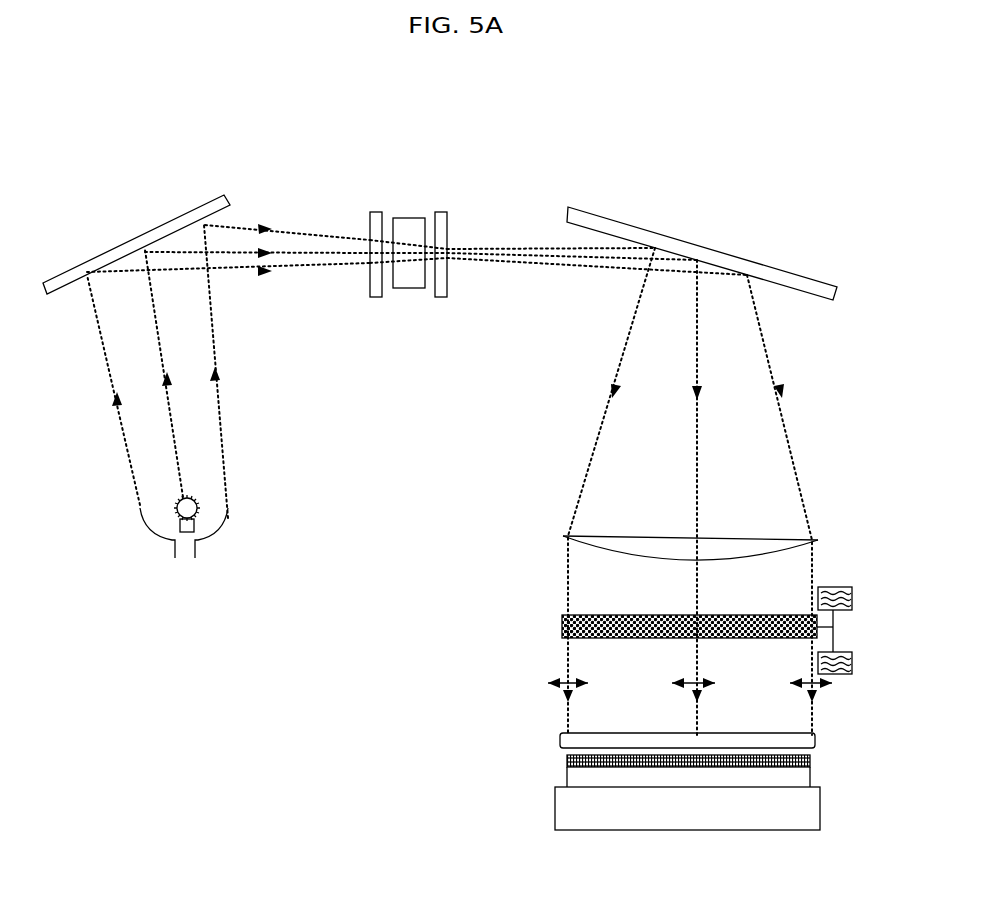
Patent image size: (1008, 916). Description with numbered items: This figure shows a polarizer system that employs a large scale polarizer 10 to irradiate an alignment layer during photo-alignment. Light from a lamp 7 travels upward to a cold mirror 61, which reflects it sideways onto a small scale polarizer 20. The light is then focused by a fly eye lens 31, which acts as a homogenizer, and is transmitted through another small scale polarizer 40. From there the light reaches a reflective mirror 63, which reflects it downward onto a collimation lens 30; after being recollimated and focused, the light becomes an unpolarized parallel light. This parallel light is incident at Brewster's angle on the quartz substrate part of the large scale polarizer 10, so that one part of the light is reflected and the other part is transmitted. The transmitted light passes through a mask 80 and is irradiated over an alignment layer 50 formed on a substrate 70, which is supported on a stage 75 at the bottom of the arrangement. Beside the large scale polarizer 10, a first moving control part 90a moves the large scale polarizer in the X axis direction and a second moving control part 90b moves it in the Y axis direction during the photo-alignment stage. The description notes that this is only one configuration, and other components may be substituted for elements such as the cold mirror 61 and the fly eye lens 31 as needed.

The lamp 7 is at (194, 494).
The cold mirror 61 is at (128, 248).
The small scale polarizer 20 is at (373, 212).
The fly eye lens 31 is at (412, 280).
The small scale polarizer 40 is at (444, 212).
The reflective mirror 63 is at (787, 277).
The collimation lens 30 is at (777, 552).
The large scale polarizer 10 is at (572, 626).
The first moving control part 90a is at (827, 590).
The second moving control part 90b is at (840, 674).
The mask 80 is at (583, 737).
The alignment layer 50 is at (570, 758).
The substrate 70 is at (797, 782).
The stage 75 is at (560, 794).